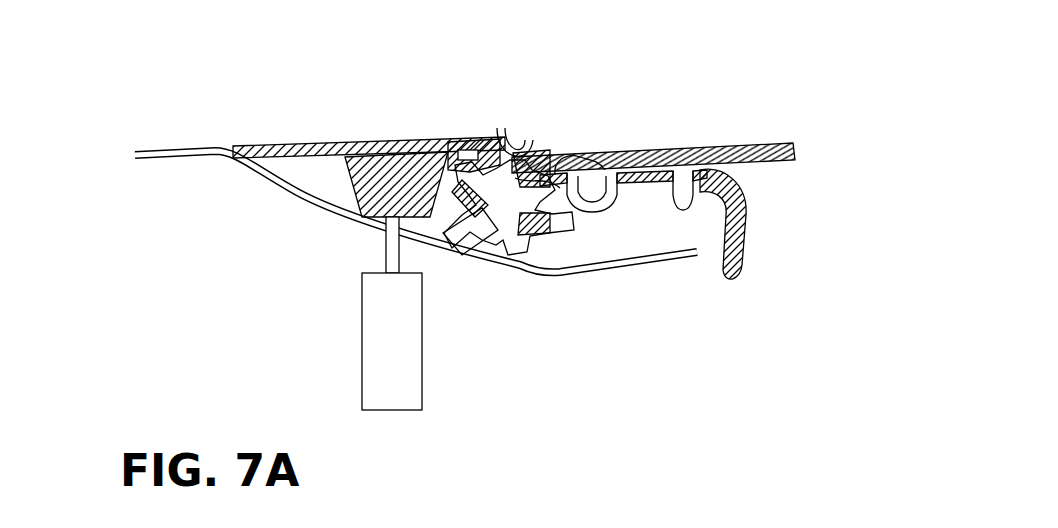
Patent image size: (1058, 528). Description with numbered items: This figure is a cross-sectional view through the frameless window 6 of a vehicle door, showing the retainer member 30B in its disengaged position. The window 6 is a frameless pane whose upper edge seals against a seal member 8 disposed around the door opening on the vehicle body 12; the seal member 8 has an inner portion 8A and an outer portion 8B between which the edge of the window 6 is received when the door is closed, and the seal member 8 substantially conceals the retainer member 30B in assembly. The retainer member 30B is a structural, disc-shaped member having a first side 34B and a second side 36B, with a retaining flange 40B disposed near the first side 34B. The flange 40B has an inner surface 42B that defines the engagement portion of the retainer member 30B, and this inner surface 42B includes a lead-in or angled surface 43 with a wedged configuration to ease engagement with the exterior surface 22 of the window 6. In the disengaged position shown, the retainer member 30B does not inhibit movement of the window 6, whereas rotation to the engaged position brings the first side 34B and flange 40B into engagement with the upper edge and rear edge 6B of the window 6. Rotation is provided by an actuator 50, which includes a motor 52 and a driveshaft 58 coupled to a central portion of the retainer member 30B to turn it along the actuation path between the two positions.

The vehicle body 12 is at (157, 155).
The retainer member 30B is at (345, 121).
The second side 36B is at (258, 145).
The first side 34B is at (430, 138).
The retaining flange 40B is at (470, 138).
The lead-in or angled surface 43 is at (503, 132).
The inner surface 42B is at (523, 130).
The exterior surface 22 is at (695, 150).
The frameless window 6 is at (653, 126).
The rear edge 6B is at (567, 157).
The outer portion 8B is at (527, 153).
The seal member 8 is at (679, 253).
The inner portion 8A is at (745, 235).
The actuator 50 is at (383, 313).
The driveshaft 58 is at (383, 256).
The motor 52 is at (418, 330).